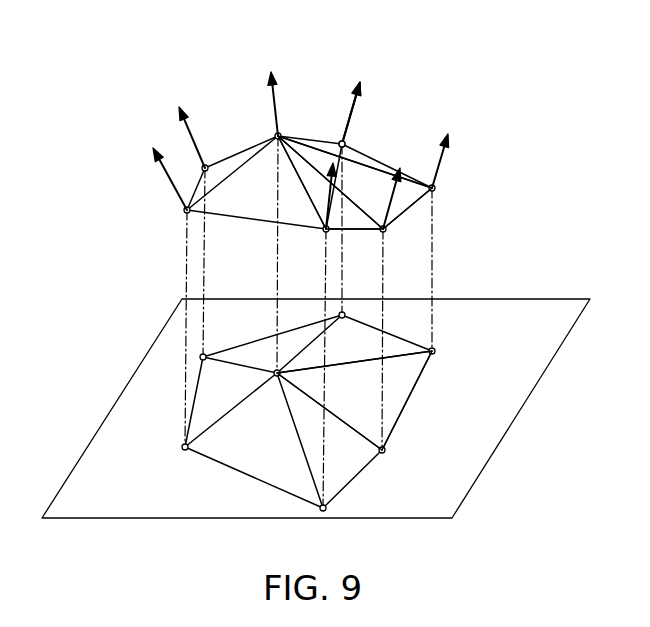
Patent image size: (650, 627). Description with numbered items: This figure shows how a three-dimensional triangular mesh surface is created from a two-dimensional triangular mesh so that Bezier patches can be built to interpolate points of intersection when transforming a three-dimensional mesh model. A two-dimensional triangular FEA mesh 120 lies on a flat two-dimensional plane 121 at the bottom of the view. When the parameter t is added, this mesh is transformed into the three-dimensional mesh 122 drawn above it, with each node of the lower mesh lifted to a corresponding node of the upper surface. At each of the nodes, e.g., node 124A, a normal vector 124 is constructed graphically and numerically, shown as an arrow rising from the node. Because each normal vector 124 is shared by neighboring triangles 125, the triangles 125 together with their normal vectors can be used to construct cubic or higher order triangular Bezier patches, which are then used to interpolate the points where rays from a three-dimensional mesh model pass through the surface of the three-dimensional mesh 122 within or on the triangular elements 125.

The 2D triangular FEA mesh 120 is at (432, 368).
The 2D plane 121 is at (460, 462).
The 3D mesh 122 is at (391, 145).
The normal vector 124 is at (348, 112).
The node 124A is at (345, 143).
The triangle 125 is at (357, 222).